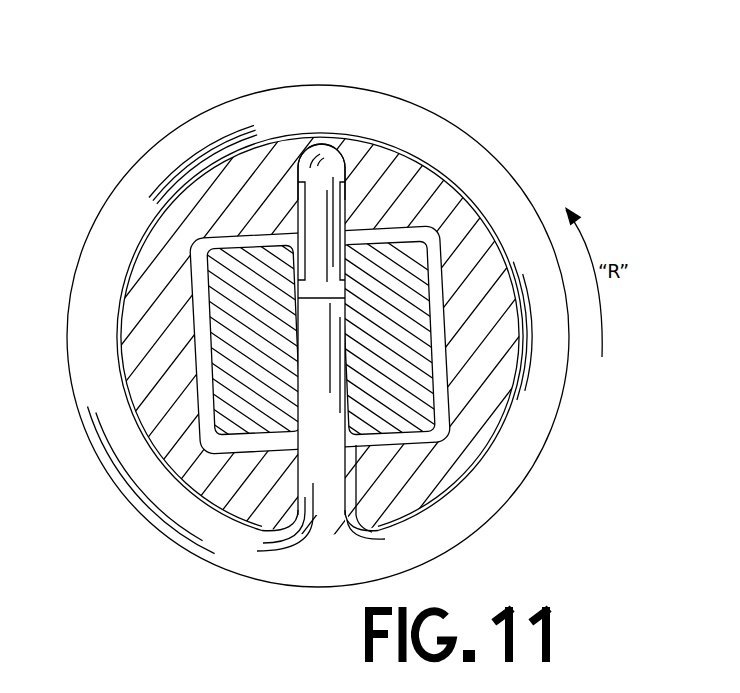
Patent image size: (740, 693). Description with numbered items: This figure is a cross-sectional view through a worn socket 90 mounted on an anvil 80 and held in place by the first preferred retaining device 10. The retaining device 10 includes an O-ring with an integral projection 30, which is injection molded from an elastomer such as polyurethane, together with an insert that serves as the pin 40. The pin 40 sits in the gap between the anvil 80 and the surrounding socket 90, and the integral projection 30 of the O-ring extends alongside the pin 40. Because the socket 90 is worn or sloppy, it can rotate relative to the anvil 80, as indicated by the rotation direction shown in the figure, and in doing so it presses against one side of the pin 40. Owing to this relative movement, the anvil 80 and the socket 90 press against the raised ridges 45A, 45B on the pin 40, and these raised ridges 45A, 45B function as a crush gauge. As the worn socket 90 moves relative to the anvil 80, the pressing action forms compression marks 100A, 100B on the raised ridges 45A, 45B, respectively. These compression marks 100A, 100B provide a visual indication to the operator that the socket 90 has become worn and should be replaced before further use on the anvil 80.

The retaining device 10 is at (513, 192).
The integral projection 30 is at (337, 473).
The pin 40 is at (318, 140).
The raised ridge 45A is at (297, 224).
The raised ridge 45B is at (397, 240).
The anvil 80 is at (343, 227).
The socket 90 is at (452, 187).
The compression mark 100A is at (297, 257).
The compression mark 100B is at (343, 227).